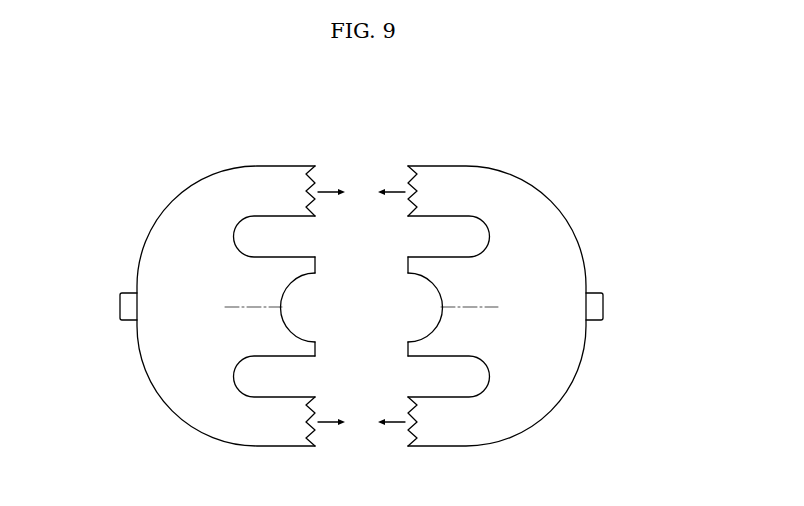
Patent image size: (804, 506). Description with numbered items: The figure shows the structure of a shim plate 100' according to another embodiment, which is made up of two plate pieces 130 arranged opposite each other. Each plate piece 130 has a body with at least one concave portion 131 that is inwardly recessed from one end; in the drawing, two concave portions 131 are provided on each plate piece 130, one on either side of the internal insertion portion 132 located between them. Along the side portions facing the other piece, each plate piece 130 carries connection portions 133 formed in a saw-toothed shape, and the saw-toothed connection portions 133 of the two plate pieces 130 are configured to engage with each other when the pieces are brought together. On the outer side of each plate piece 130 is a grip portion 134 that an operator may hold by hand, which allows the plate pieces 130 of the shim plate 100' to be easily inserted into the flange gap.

The shim plate 100' is at (359, 281).
The plate piece 130 is at (134, 198).
The concave portion 131 is at (253, 235).
The internal insertion portion 132 is at (285, 272).
The connection portion 133 is at (298, 440).
The grip portion 134 is at (604, 304).